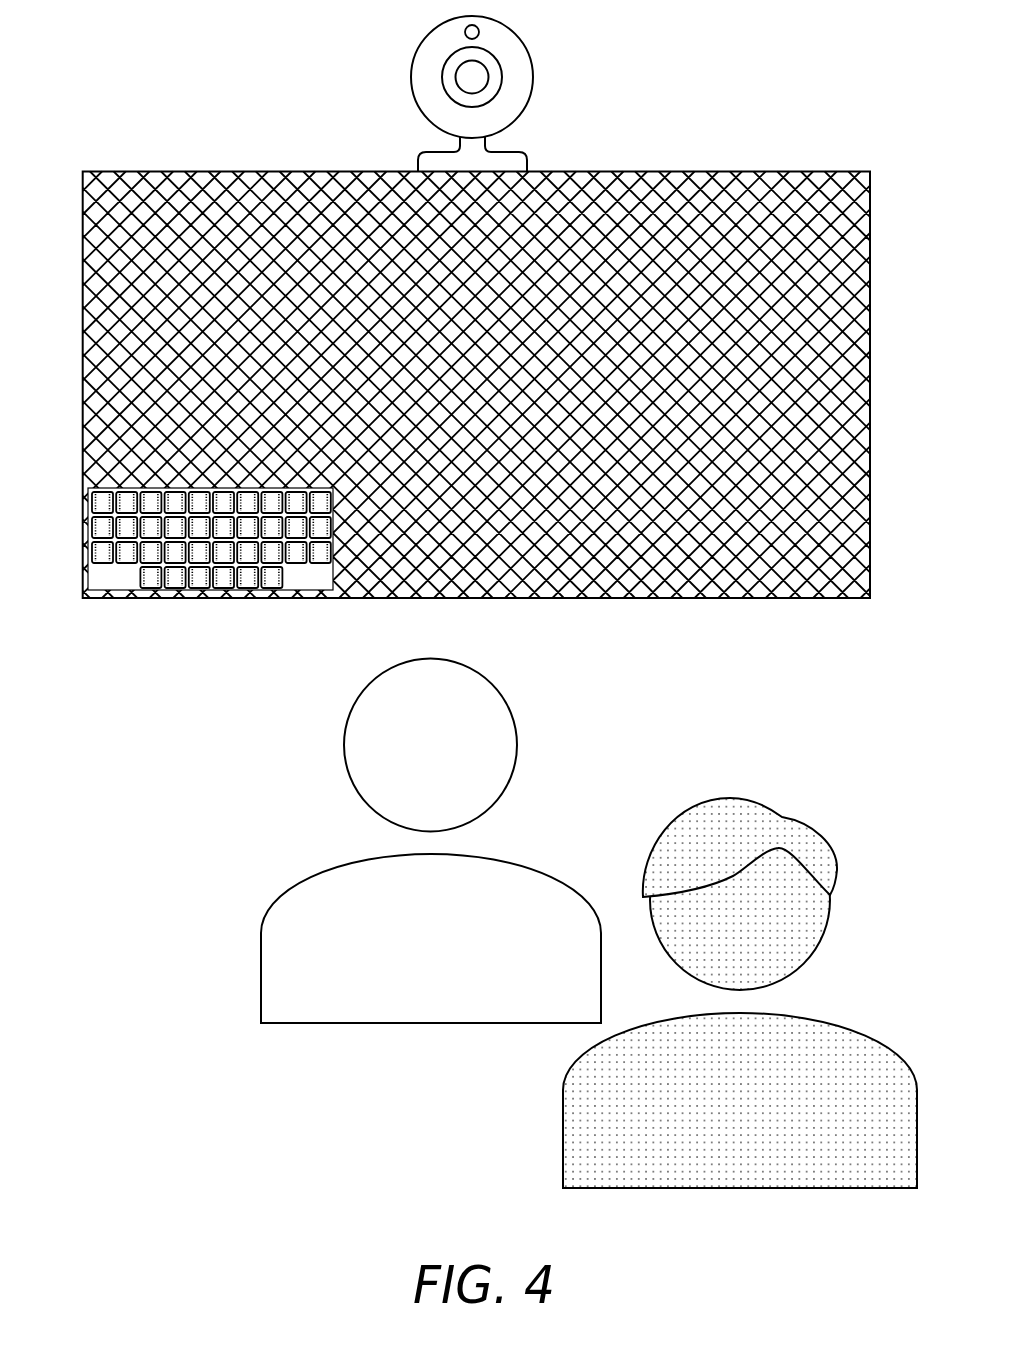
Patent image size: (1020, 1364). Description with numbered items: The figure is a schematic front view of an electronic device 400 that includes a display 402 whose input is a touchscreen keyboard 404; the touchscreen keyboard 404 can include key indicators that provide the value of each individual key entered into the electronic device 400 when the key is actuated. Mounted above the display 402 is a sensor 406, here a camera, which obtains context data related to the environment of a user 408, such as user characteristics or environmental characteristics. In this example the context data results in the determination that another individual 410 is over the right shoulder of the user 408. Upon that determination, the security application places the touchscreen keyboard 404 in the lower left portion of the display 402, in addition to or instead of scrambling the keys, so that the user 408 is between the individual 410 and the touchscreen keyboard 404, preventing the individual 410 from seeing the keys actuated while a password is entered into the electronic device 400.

The electronic device 400 is at (837, 126).
The display 402 is at (698, 171).
The touchscreen keyboard 404 is at (88, 525).
The sensor 406 is at (497, 31).
The user 408 is at (261, 979).
The individual 410 is at (563, 1143).